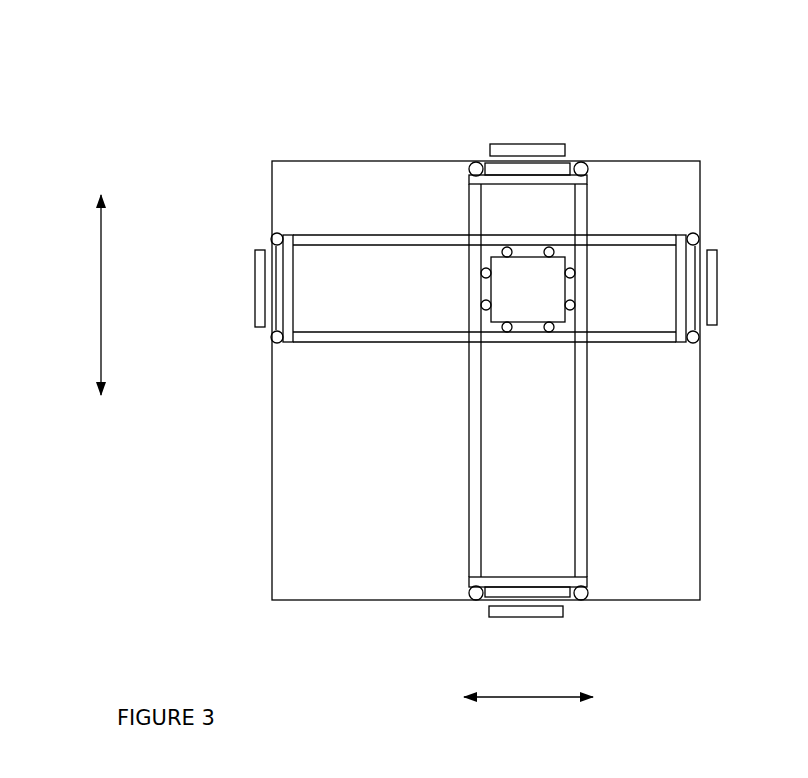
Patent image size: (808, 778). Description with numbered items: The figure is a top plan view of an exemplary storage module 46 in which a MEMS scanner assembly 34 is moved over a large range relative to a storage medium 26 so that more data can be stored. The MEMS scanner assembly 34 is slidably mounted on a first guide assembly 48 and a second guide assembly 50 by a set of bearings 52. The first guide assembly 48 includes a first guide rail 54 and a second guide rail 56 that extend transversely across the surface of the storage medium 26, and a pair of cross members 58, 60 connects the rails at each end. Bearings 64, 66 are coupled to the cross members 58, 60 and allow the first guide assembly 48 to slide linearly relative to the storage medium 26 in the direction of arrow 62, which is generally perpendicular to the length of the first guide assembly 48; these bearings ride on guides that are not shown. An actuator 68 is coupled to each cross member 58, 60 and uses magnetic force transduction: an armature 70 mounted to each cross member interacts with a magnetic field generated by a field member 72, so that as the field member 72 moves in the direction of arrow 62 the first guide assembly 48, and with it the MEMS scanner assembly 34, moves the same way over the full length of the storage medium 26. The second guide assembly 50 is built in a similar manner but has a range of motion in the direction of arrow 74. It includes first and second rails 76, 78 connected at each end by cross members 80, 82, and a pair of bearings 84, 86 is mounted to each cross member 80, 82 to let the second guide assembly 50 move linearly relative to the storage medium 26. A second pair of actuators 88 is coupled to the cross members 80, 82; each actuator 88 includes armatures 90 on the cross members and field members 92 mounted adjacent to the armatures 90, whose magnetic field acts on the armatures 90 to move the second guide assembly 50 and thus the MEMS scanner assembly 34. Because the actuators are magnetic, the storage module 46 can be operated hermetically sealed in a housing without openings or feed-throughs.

The storage medium 26 is at (680, 162).
The MEMS scanner assembly 34 is at (528, 289).
The storage module 46 is at (223, 86).
The first guide assembly 48 is at (575, 420).
The second guide assembly 50 is at (484, 230).
The bearings 52 is at (548, 249).
The first guide rail 54 is at (588, 535).
The second guide rail 56 is at (469, 535).
The cross member 58 is at (503, 577).
The cross member 60 is at (572, 186).
The arrow 62 is at (508, 698).
The bearings 64 is at (462, 598).
The bearings 66 is at (470, 164).
The actuator 68 is at (546, 131).
The armature 70 is at (483, 598).
The field member 72 is at (507, 619).
The arrow 74 is at (100, 280).
The first rail 76 is at (340, 234).
The second rail 78 is at (311, 343).
The cross member 80 is at (299, 291).
The cross member 82 is at (675, 300).
The bearings 84 is at (271, 233).
The bearings 86 is at (700, 236).
The actuators 88 is at (241, 251).
The armatures 90 is at (272, 331).
The field members 92 is at (253, 296).